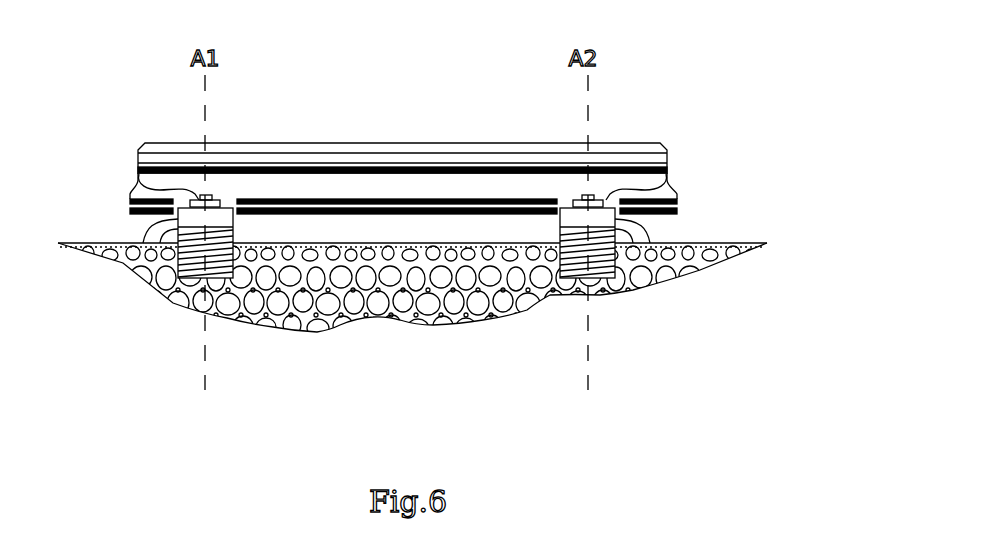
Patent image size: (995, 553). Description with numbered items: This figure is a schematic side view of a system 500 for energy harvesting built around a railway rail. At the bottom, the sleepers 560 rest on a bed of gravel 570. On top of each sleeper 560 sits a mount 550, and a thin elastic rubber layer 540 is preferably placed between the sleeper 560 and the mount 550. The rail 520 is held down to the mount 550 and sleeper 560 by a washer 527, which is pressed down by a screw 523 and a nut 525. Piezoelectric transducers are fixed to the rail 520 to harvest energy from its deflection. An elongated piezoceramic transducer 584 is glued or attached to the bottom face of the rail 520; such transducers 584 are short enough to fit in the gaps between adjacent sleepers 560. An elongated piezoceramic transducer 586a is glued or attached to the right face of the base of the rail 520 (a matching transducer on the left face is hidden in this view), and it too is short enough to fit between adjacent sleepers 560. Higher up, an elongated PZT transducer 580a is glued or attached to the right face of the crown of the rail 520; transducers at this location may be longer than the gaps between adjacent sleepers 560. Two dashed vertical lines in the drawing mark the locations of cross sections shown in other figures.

The system for energy harvesting 500 is at (618, 70).
The rail 520 is at (290, 143).
The elongated PZT transducer 580a is at (453, 167).
The elongated piezoceramic transducer 586a is at (393, 199).
The elongated piezoceramic transducer 584 is at (385, 218).
The nut 525 is at (137, 190).
The washer 527 is at (220, 200).
The screw 523 is at (204, 195).
The mount 550 is at (130, 266).
The gravel 570 is at (273, 328).
The sleeper 560 is at (210, 280).
The thin elastic layer 540 is at (170, 280).